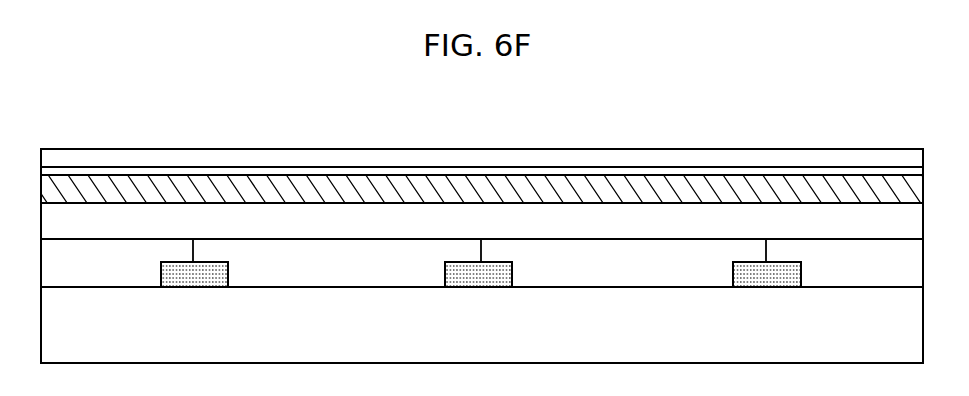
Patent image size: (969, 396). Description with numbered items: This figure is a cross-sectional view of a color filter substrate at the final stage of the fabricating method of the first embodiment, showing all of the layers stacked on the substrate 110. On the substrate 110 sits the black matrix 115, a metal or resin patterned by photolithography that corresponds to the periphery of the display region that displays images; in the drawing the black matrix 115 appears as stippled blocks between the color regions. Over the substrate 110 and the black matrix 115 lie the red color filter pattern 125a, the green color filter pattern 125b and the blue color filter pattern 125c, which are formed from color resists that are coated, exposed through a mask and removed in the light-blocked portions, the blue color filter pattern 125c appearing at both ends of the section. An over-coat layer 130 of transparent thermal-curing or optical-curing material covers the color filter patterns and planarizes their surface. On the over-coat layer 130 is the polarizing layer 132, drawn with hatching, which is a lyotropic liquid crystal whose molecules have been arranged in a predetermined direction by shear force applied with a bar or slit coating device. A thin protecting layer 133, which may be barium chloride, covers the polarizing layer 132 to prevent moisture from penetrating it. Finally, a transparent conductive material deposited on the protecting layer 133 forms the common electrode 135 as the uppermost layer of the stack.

The substrate 110 is at (907, 337).
The black matrix 115 is at (498, 266).
The red color filter pattern 125a is at (295, 272).
The green color filter pattern 125b is at (572, 272).
The blue color filter pattern 125c is at (133, 272).
The over-coat layer 130 is at (202, 225).
The polarizing layer 132 is at (370, 192).
The protecting layer 133 is at (597, 171).
The common electrode 135 is at (727, 160).